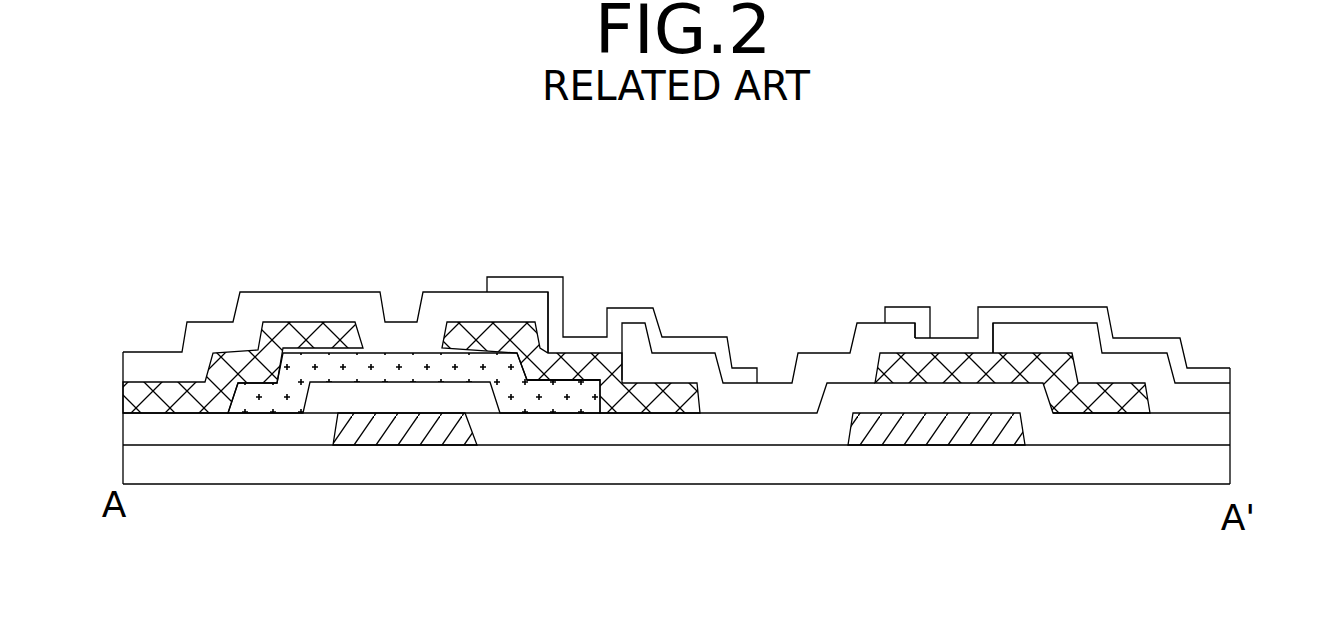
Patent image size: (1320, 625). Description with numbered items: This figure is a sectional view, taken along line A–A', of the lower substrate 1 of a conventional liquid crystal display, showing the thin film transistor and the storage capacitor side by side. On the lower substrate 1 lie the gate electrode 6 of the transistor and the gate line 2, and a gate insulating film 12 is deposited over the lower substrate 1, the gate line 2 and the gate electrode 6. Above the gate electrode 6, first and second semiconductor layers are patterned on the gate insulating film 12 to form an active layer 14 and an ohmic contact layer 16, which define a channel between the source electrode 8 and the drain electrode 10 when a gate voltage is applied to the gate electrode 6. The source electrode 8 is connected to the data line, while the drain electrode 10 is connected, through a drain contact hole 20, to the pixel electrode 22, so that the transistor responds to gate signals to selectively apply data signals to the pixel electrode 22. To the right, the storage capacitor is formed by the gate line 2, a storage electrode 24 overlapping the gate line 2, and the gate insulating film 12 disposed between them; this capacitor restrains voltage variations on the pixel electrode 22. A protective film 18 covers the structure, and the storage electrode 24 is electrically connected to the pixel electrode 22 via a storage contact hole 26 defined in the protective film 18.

The lower substrate 1 is at (1230, 472).
The gate line 2 is at (879, 432).
The gate electrode 6 is at (391, 427).
The source electrode 8 is at (228, 365).
The drain electrode 10 is at (462, 338).
The gate insulating film 12 is at (1228, 427).
The active layer 14 is at (278, 403).
The ohmic contact layer 16 is at (540, 388).
The protective film 18 is at (1227, 393).
The drain contact hole 20 is at (582, 280).
The pixel electrode 22 is at (673, 338).
The storage electrode 24 is at (1020, 370).
The storage contact hole 26 is at (953, 310).